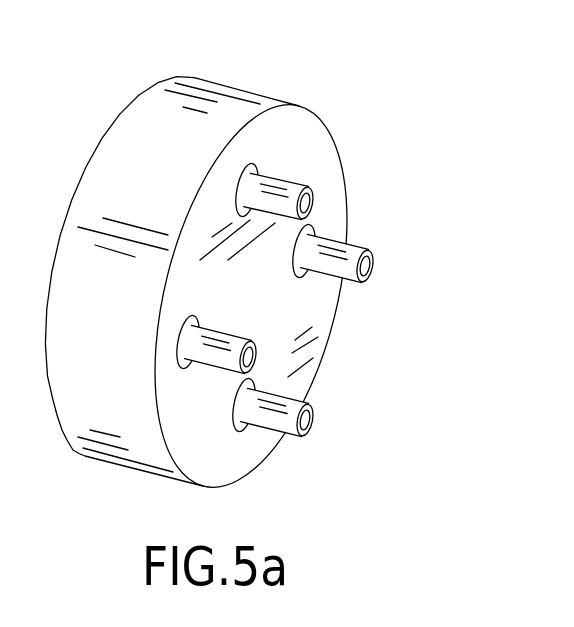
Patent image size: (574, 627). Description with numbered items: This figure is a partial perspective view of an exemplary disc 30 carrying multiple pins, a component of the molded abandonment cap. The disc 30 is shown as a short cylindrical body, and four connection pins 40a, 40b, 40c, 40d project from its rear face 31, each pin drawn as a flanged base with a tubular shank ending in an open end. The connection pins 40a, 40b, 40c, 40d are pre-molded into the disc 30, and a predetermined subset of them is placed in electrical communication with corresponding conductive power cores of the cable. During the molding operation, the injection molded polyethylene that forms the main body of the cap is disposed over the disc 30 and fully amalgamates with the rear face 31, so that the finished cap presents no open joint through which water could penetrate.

The disc 30 is at (233, 103).
The rear face 31 is at (320, 146).
The connection pin 40a is at (316, 199).
The connection pin 40b is at (373, 268).
The connection pin 40c is at (315, 415).
The connection pin 40d is at (223, 360).